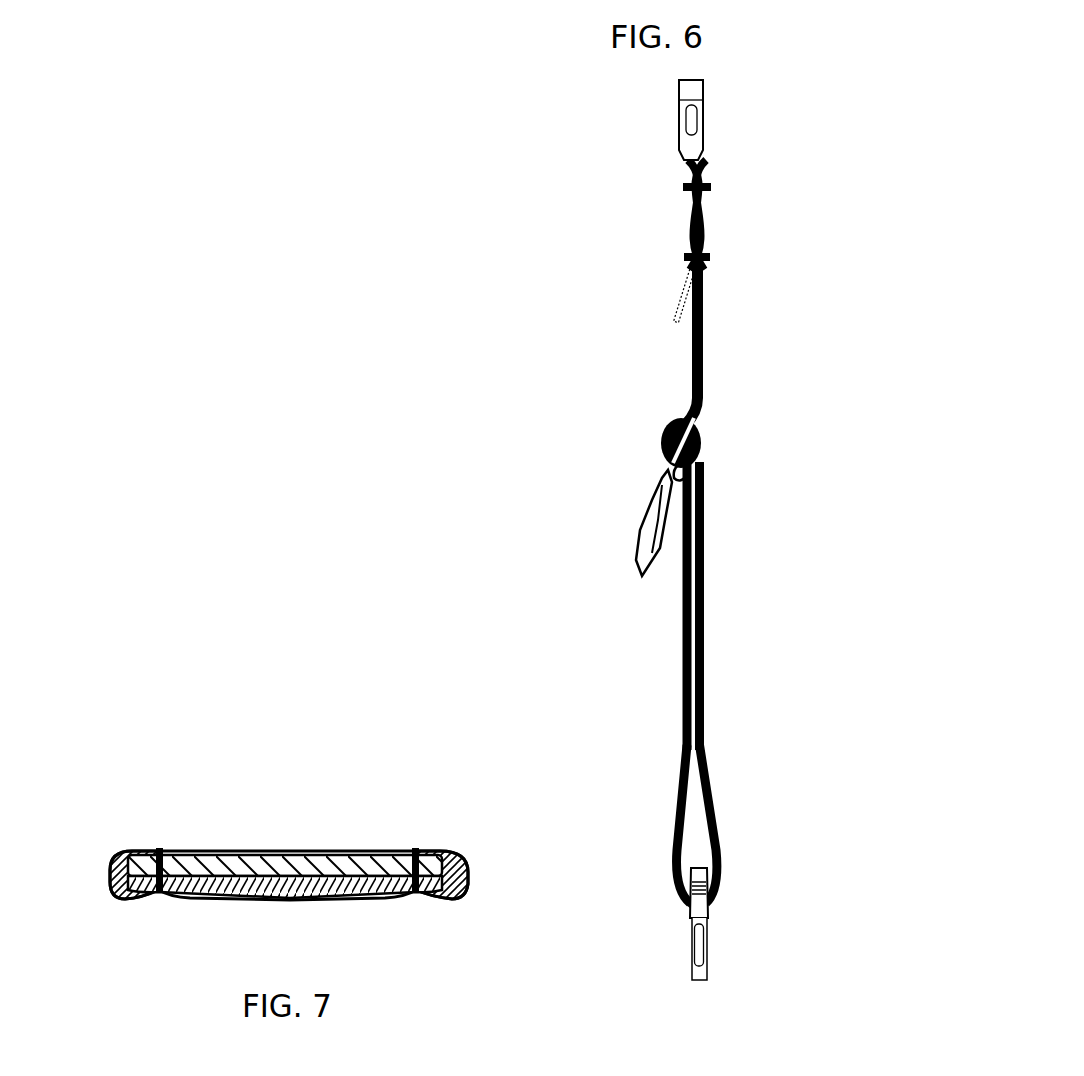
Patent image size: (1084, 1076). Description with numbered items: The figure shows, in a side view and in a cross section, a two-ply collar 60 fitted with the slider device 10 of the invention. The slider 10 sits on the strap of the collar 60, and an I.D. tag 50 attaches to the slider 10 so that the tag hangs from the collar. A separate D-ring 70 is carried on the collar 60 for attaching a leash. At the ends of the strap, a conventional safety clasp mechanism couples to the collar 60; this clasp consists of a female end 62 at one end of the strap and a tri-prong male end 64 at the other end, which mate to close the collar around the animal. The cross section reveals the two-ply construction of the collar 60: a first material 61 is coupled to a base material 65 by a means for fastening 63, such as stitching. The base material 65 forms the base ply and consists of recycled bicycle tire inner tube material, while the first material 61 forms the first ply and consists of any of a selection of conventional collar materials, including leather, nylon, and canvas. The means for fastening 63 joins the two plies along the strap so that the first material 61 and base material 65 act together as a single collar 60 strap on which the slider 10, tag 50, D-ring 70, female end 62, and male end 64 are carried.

In FIG. 6, the slider device 10 is at (673, 463).
In FIG. 6, the I.D. tag 50 is at (653, 530).
In FIG. 6, the two-ply collar 60 is at (645, 373).
In FIG. 7, the two-ply collar 60 is at (281, 835).
In FIG. 7, the first material 61 is at (343, 868).
In FIG. 6, the female end 62 is at (690, 90).
In FIG. 7, the means for fastening 63 is at (418, 852).
In FIG. 6, the tri-prong male end 64 is at (700, 962).
In FIG. 7, the base material 65 is at (355, 899).
In FIG. 6, the D-ring 70 is at (678, 302).